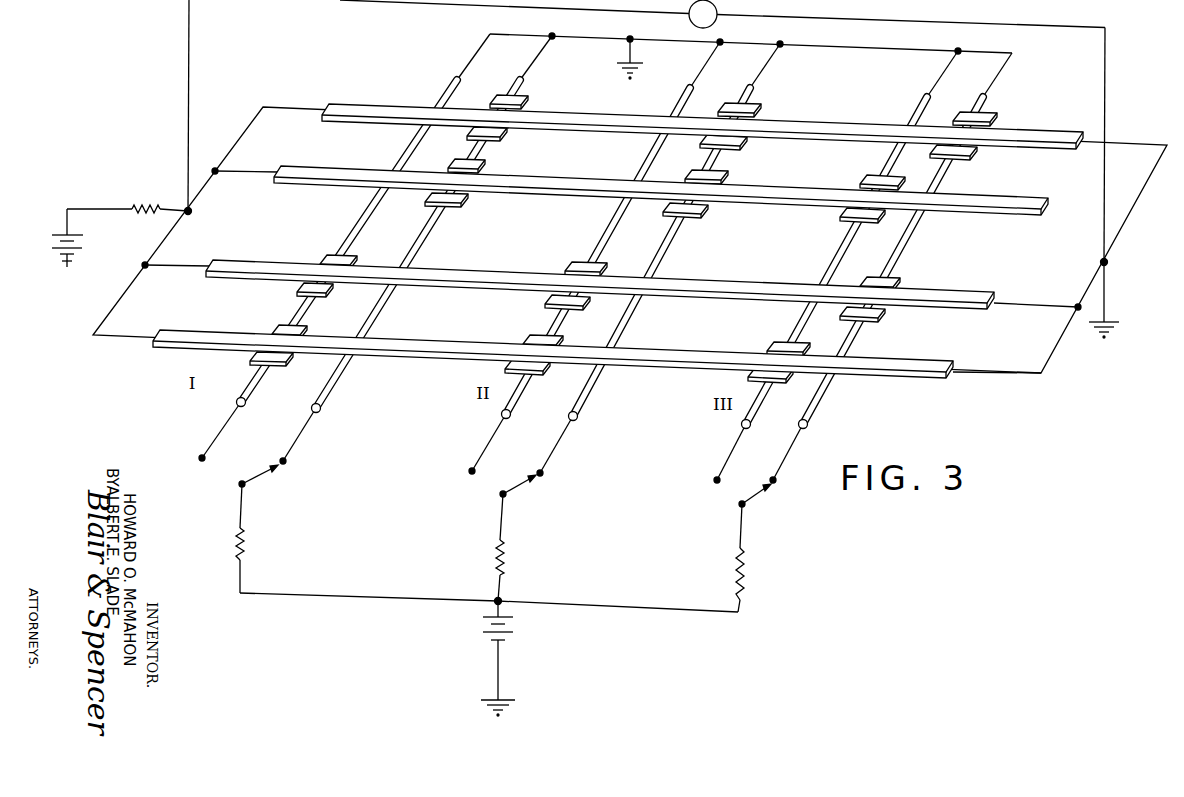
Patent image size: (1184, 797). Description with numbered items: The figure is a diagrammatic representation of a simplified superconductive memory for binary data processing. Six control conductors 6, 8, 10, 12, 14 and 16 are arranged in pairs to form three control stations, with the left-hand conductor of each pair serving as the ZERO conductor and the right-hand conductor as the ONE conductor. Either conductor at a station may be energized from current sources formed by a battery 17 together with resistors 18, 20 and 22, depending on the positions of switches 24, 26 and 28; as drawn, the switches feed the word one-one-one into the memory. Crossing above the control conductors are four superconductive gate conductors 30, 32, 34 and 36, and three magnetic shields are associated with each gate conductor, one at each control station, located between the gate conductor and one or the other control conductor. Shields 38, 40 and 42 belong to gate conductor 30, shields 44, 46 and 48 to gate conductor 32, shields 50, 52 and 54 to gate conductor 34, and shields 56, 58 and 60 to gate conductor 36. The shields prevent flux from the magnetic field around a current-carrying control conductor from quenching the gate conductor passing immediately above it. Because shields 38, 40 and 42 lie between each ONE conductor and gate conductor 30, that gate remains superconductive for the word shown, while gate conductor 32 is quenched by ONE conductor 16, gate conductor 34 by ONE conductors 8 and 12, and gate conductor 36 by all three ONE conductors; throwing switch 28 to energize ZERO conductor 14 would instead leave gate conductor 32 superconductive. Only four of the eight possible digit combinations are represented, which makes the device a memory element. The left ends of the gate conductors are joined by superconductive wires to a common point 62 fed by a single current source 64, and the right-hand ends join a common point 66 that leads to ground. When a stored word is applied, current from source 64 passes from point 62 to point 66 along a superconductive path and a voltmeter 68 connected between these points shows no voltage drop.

The control conductor 6 is at (363, 226).
The control conductor 8 is at (439, 226).
The control conductor 10 is at (614, 226).
The control conductor 12 is at (668, 250).
The control conductor 14 is at (842, 256).
The control conductor 16 is at (910, 250).
The battery 17 is at (509, 626).
The resistor 18 is at (246, 542).
The resistor 20 is at (506, 562).
The resistor 22 is at (746, 566).
The switch 24 is at (257, 478).
The switch 26 is at (518, 488).
The switch 28 is at (757, 496).
The gate conductor 30 is at (590, 118).
The gate conductor 32 is at (549, 183).
The gate conductor 34 is at (481, 275).
The gate conductor 36 is at (398, 348).
The magnetic shield 38 is at (527, 100).
The magnetic shield 40 is at (766, 109).
The magnetic shield 42 is at (999, 118).
The magnetic shield 44 is at (488, 167).
The magnetic shield 46 is at (728, 178).
The magnetic shield 48 is at (879, 178).
The magnetic shield 50 is at (350, 262).
The magnetic shield 52 is at (585, 264).
The magnetic shield 54 is at (900, 281).
The magnetic shield 56 is at (303, 331).
The magnetic shield 58 is at (537, 336).
The magnetic shield 60 is at (778, 344).
The common point 62 is at (195, 212).
The current source 64 is at (130, 185).
The common point 66 is at (1100, 262).
The voltmeter 68 is at (720, 18).